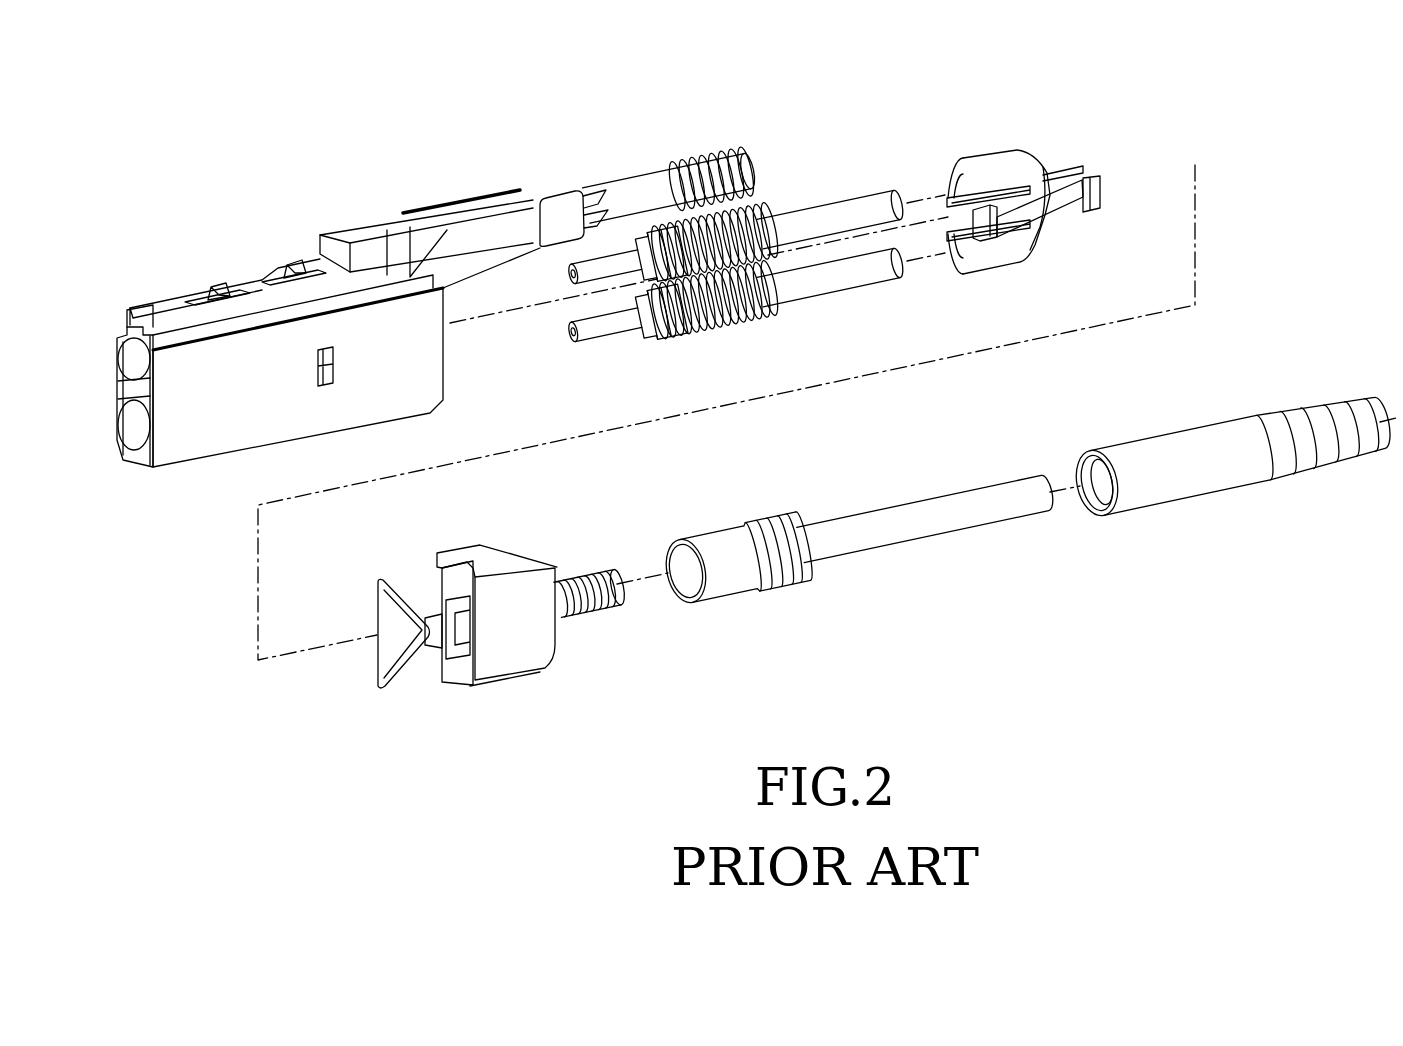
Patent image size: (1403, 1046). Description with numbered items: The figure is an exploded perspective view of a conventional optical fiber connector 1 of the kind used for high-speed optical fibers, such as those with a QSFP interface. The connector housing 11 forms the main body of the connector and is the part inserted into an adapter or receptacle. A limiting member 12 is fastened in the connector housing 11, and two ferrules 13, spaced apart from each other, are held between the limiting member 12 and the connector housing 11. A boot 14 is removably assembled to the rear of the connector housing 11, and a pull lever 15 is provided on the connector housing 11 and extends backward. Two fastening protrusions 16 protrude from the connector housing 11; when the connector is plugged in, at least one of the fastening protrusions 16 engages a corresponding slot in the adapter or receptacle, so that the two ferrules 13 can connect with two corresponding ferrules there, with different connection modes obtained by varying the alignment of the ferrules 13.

The optical fiber connector 1 is at (441, 168).
The connector housing 11 is at (197, 442).
The limiting member 12 is at (987, 165).
The ferrules 13 is at (563, 333).
The boot 14 is at (532, 655).
The pull lever 15 is at (652, 175).
The fastening protrusions 16 is at (222, 282).